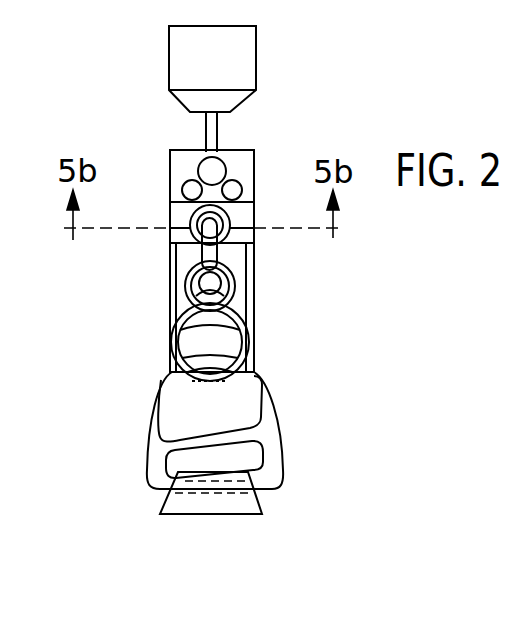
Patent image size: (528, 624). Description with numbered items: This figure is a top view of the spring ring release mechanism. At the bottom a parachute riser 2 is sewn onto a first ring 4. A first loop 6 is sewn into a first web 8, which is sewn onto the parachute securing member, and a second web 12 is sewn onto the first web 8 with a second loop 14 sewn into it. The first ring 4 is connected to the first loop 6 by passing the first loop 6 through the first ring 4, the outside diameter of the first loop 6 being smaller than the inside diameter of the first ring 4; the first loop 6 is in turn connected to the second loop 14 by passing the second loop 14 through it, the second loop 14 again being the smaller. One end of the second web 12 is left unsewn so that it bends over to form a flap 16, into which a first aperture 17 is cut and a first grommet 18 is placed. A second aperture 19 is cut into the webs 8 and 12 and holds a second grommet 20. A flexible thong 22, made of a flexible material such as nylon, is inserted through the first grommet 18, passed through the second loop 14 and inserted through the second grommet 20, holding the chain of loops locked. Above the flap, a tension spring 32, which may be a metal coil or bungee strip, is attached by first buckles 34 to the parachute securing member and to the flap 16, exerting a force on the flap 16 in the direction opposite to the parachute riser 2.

The parachute riser 2 is at (165, 497).
The first ring 4 is at (275, 457).
The first loop 6 is at (250, 340).
The first web 8 is at (224, 380).
The second web 12 is at (212, 325).
The second loop 14 is at (236, 293).
The flap 16 is at (254, 213).
The first aperture 17 is at (228, 212).
The first grommet 18 is at (196, 218).
The second aperture 19 is at (215, 276).
The second grommet 20 is at (186, 291).
The flexible thong 22 is at (202, 260).
The tension spring 32 is at (250, 77).
The first buckles 34 is at (205, 136).